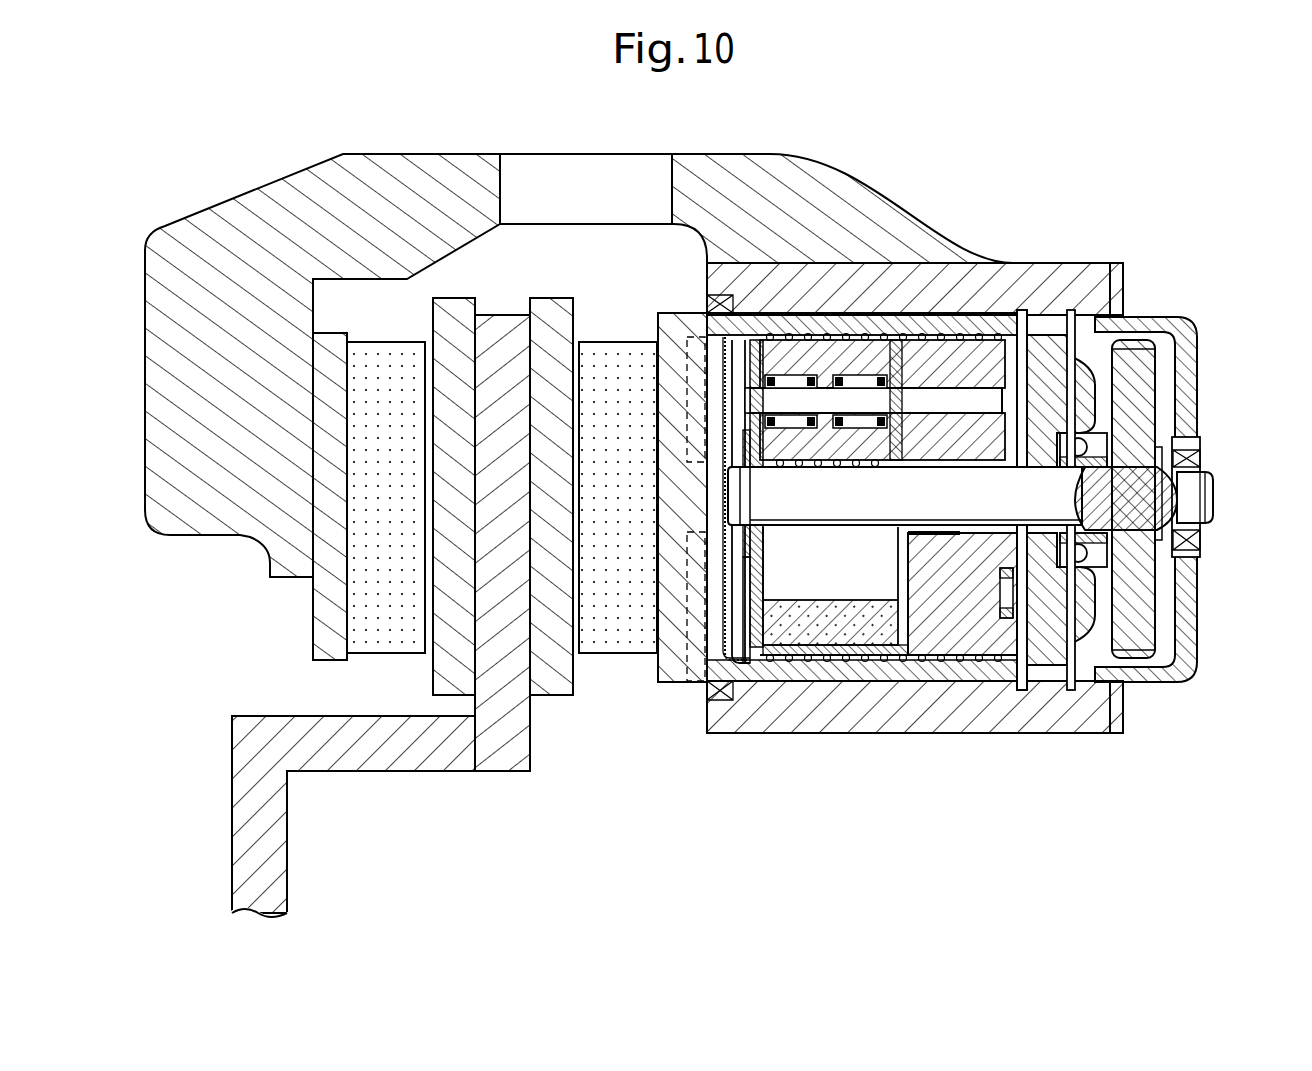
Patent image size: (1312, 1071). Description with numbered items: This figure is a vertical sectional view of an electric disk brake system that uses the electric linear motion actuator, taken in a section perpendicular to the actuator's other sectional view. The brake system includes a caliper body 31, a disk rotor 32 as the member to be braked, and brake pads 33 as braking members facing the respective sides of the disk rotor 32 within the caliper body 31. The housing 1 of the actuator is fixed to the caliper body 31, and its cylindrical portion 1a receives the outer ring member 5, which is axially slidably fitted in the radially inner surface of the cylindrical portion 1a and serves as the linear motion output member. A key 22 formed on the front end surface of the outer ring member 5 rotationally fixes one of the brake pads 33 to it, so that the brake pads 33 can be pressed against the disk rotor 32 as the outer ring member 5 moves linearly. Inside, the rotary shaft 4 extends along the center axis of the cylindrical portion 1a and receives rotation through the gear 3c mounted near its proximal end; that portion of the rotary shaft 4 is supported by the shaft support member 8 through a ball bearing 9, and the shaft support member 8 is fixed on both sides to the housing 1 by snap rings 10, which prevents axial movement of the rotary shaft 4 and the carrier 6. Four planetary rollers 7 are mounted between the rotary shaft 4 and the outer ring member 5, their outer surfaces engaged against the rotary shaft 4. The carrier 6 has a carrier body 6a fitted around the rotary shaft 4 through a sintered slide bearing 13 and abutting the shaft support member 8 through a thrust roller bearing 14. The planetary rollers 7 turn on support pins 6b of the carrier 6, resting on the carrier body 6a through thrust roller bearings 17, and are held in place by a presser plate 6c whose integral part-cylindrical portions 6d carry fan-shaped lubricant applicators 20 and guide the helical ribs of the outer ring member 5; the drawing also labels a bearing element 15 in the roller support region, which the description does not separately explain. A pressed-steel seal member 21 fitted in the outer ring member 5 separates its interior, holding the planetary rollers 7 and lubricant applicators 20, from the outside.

The housing 1 is at (1095, 260).
The cylindrical portion 1a is at (715, 725).
The gear 3c is at (1133, 607).
The rotary shaft 4 is at (1192, 500).
The outer ring member 5 is at (774, 300).
The carrier 6 is at (983, 657).
The carrier body 6a is at (942, 620).
The support pins 6b is at (940, 400).
The presser plate 6c is at (749, 633).
The part-cylindrical portions 6d is at (827, 653).
The planetary rollers 7 is at (828, 307).
The shaft support member 8 is at (1065, 378).
The ball bearing 9 is at (1110, 435).
The snap rings 10 is at (1070, 310).
The slide bearing 13 is at (925, 533).
The thrust roller bearing 14 is at (1020, 312).
The needle bearing 15 is at (792, 432).
The thrust roller bearings 17 is at (898, 340).
The lubricant applicators 20 is at (797, 630).
The seal member 21 is at (722, 618).
The key 22 is at (690, 330).
The caliper body 31 is at (430, 190).
The disk rotor 32 is at (505, 343).
The brake pads 33 is at (390, 355).